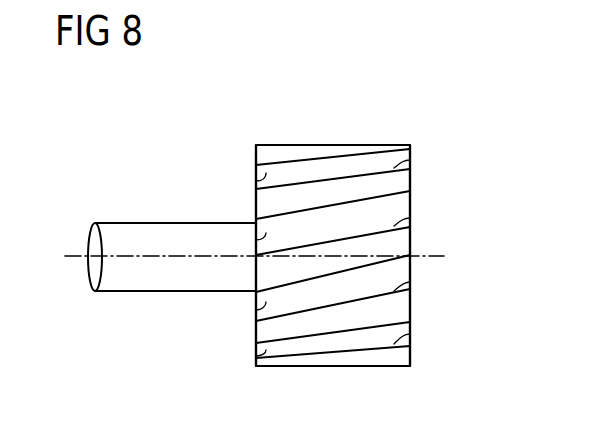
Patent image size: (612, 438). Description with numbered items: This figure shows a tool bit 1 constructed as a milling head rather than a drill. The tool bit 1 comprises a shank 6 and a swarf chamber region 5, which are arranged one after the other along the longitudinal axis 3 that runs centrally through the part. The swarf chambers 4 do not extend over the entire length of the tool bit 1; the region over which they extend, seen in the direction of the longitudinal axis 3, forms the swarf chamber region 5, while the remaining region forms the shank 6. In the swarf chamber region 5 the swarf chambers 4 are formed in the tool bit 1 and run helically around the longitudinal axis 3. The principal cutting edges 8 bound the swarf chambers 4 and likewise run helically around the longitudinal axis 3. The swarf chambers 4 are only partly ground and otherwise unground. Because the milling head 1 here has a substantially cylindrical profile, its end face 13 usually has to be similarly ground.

The tool bit 1 is at (243, 109).
The longitudinal axis 3 is at (72, 256).
The swarf chambers 4 is at (256, 181).
The swarf chamber region 5 is at (314, 125).
The shank 6 is at (121, 208).
The principal cutting edges 8 is at (410, 160).
The end face 13 is at (256, 161).